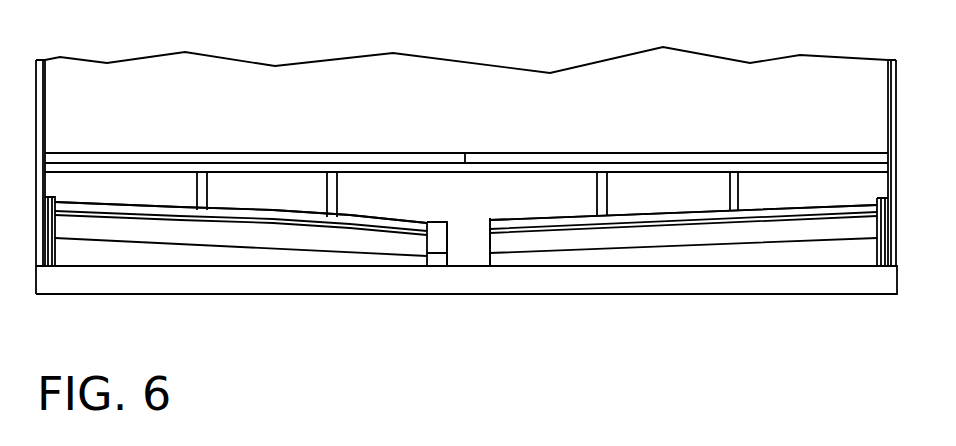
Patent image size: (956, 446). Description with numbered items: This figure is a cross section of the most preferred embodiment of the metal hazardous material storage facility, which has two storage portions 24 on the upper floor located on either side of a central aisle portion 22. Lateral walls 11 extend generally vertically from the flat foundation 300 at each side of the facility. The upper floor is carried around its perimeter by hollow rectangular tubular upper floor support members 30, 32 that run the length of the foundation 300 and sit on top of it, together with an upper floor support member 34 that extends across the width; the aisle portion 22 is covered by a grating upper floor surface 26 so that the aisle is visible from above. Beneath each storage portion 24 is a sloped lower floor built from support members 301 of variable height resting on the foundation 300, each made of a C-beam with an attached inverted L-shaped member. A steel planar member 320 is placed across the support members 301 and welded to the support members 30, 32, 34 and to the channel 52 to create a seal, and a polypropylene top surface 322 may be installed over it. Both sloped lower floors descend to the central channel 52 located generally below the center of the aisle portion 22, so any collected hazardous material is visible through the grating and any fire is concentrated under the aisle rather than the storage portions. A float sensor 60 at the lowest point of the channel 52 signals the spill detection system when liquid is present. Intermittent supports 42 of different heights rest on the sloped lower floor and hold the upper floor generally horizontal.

The lateral wall 11 is at (46, 88).
The aisle portion 22 is at (490, 97).
The storage portion 24 is at (182, 122).
The upper floor surface 26 is at (807, 155).
The upper floor support member 30 is at (55, 250).
The upper floor support member 32 is at (880, 253).
The upper floor support member 34 is at (423, 167).
The intermittent support 42 is at (207, 178).
The channel 52 is at (484, 247).
The sensor 60 is at (512, 304).
The foundation 300 is at (620, 282).
The support member 301 is at (226, 254).
The planar member 320 is at (430, 225).
The top surface 322 is at (275, 204).